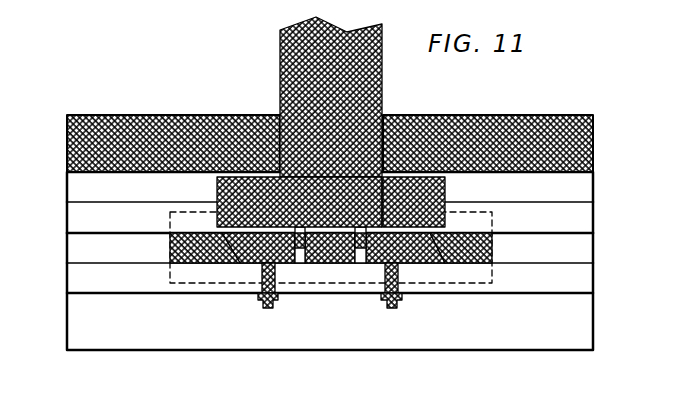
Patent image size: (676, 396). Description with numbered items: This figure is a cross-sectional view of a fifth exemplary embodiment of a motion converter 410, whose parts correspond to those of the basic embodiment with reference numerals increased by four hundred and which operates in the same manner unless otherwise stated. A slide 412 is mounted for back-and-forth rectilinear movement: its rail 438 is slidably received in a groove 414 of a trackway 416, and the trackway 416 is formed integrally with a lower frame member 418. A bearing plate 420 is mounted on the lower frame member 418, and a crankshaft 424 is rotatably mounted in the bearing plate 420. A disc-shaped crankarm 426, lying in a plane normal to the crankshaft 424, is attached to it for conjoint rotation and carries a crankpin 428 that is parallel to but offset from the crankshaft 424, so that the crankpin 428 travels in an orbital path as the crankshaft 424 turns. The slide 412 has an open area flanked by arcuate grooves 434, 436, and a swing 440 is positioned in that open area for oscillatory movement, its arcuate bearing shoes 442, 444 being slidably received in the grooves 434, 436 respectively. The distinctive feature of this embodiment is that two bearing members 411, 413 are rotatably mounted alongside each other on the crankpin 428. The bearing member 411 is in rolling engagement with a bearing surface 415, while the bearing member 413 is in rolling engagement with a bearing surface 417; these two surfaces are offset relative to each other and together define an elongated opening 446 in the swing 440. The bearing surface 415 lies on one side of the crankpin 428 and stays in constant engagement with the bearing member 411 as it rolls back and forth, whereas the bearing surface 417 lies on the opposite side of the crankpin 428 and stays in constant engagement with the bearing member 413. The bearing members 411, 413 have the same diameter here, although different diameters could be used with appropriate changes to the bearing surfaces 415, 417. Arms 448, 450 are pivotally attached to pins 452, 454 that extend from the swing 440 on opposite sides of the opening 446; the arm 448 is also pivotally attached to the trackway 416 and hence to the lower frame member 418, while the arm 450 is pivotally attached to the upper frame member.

The motion converter 410 is at (85, 90).
The bearing member 411 is at (297, 227).
The slide 412 is at (493, 234).
The bearing member 413 is at (360, 264).
The groove 414 is at (594, 241).
The bearing surface 415 is at (383, 177).
The trackway 416 is at (70, 280).
The bearing surface 417 is at (282, 264).
The lower frame member 418 is at (594, 312).
The bearing plate 420 is at (594, 145).
The crankshaft 424 is at (280, 82).
The crankarm 426 is at (418, 177).
The crankpin 428 is at (337, 264).
The arcuate groove 434 is at (220, 244).
The arcuate groove 436 is at (455, 242).
The rail 438 is at (170, 219).
The swing 440 is at (262, 264).
The arcuate bearing shoe 442 is at (232, 262).
The arcuate bearing shoe 444 is at (453, 263).
The elongated opening 446 is at (300, 262).
The arm 448 is at (265, 309).
The arm 450 is at (402, 309).
The pin 452 is at (262, 285).
The pin 454 is at (399, 268).